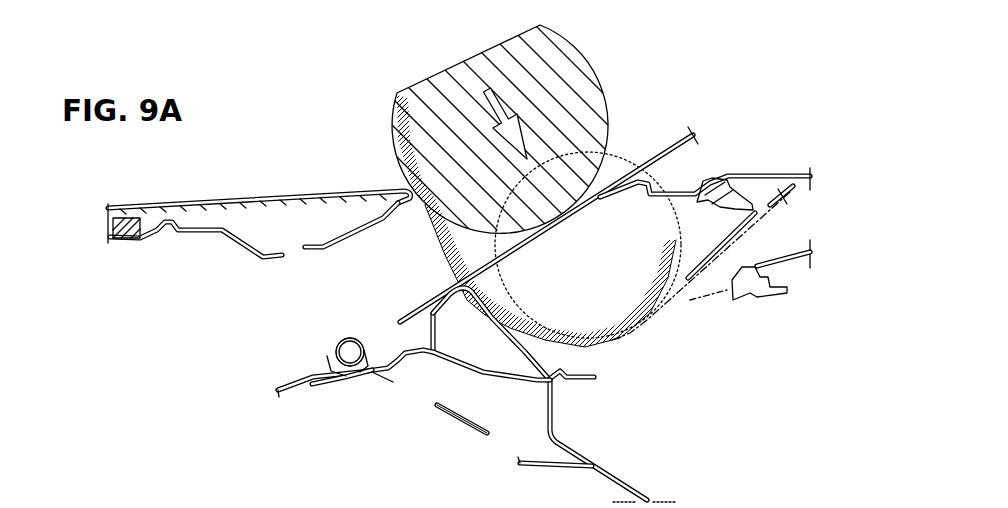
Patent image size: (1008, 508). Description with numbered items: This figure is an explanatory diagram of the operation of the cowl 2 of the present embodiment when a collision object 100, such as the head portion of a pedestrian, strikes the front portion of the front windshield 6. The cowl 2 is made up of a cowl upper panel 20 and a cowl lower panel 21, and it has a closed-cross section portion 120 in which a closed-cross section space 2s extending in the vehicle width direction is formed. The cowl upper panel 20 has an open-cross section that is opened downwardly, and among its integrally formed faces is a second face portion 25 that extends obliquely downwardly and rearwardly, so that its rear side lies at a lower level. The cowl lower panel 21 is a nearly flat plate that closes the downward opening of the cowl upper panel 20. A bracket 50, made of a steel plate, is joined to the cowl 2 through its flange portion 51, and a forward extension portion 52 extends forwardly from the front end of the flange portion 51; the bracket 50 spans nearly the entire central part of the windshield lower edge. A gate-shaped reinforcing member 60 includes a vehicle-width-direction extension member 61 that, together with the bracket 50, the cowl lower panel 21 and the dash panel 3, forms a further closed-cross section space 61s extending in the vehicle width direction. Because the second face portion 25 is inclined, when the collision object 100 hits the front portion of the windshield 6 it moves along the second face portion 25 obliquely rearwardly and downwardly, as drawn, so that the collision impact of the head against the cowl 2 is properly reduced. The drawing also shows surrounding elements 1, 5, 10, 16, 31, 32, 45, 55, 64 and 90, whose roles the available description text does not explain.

The vehicle body 1 is at (725, 192).
The cowl 2 is at (416, 337).
The closed-cross section space 2s is at (478, 344).
The dash panel 3 is at (558, 417).
The roof panel 5 is at (244, 197).
The front windshield 6 is at (673, 146).
The curtain airbag device 10 is at (325, 337).
The inflator 16 is at (344, 336).
The cowl upper panel 20 is at (537, 333).
The cowl lower panel 21 is at (488, 378).
The second face portion 25 is at (490, 306).
The lower flange 31 is at (623, 482).
The inclined wall 32 is at (531, 385).
The bracket 45 is at (326, 360).
The bracket 50 is at (300, 393).
The flange portion 51 is at (423, 368).
The forward extension portion 52 is at (313, 390).
The hook 55 is at (368, 378).
The gate-shaped reinforcing member 60 is at (461, 436).
The vehicle-width-direction extension member 61 is at (462, 426).
The closed-cross section space 61s is at (543, 445).
The lower rib 64 is at (593, 473).
The body panel 90 is at (782, 174).
The collision object 100 is at (605, 78).
The closed-cross section portion 120 is at (562, 367).